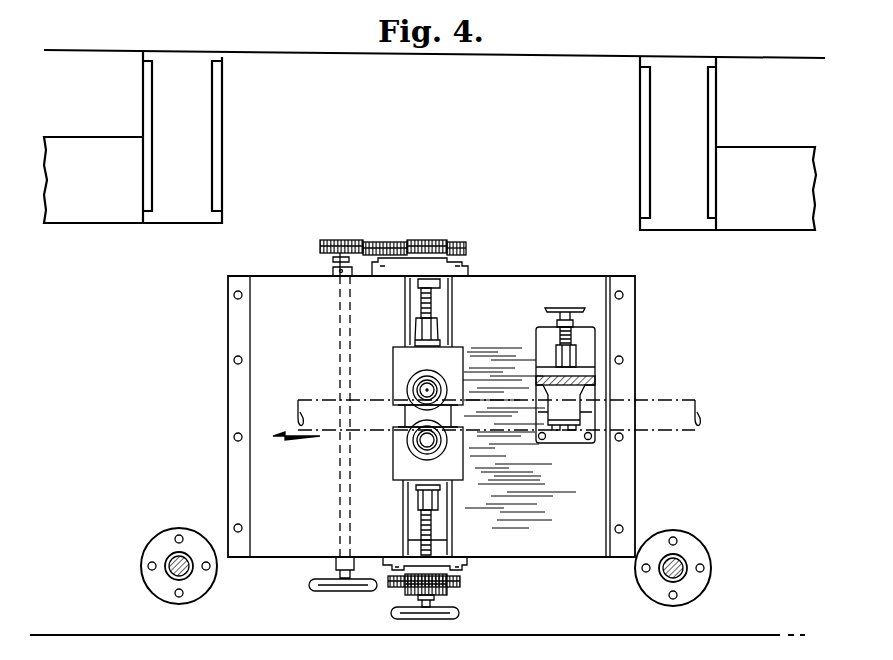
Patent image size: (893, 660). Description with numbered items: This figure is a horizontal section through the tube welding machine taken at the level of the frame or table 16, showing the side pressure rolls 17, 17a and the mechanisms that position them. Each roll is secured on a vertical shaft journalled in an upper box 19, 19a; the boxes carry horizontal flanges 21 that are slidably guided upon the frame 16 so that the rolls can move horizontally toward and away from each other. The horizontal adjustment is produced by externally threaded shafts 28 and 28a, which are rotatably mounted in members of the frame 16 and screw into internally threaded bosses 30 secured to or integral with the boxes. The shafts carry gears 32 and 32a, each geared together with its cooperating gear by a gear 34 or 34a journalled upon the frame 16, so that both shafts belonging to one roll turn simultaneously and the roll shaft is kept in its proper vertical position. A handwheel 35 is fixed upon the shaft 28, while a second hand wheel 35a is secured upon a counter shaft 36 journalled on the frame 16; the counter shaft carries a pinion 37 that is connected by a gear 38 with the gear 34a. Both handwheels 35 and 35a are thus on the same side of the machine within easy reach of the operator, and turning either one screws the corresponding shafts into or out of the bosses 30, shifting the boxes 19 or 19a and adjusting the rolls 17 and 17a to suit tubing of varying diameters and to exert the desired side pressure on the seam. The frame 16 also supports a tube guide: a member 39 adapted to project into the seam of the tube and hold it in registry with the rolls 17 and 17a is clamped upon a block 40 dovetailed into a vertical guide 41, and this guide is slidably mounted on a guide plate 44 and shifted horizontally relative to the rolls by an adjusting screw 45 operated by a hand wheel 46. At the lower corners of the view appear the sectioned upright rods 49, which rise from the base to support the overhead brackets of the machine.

The frame 16 is at (560, 556).
The side pressure roll 17 is at (440, 452).
The side pressure roll 17a is at (445, 386).
The upper box 19 is at (407, 467).
The upper box 19a is at (456, 352).
The horizontal flange 21 is at (395, 452).
The externally threaded shaft 28 is at (432, 533).
The externally threaded shaft 28a is at (423, 304).
The internally threaded boss 30 is at (418, 330).
The gear 32 is at (447, 592).
The gear 32a is at (440, 240).
The gear 34 is at (462, 583).
The gear 34a is at (467, 248).
The handwheel 35 is at (455, 615).
The hand wheel 35a is at (338, 590).
The counter shaft 36 is at (340, 505).
The pinion 37 is at (320, 248).
The gear 38 is at (387, 241).
The tube guide member 39 is at (540, 430).
The block 40 is at (569, 440).
The vertical guide 41 is at (590, 380).
The guide plate 44 is at (590, 345).
The adjusting screw 45 is at (556, 345).
The hand wheel 46 is at (562, 308).
The upright rod 49 is at (176, 576).